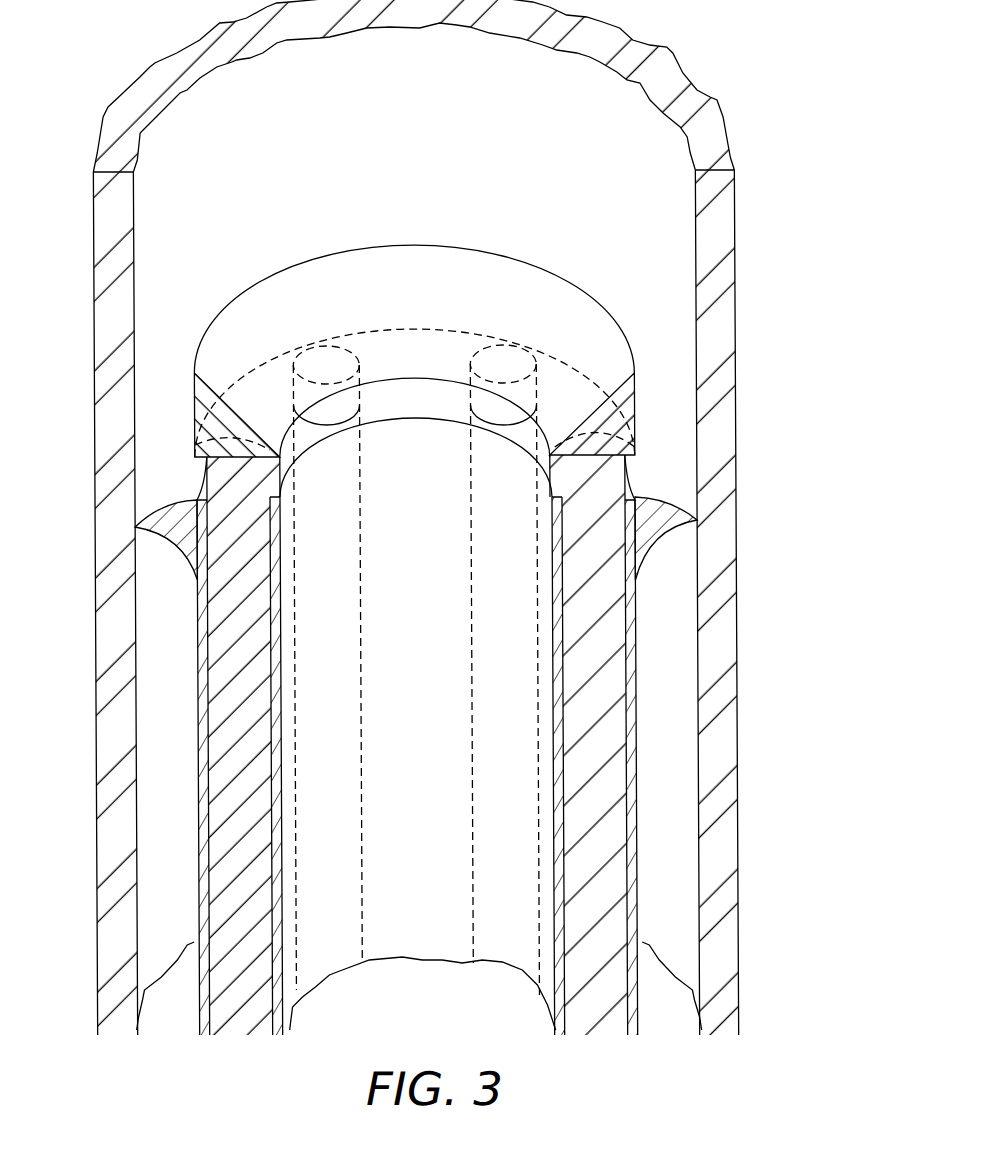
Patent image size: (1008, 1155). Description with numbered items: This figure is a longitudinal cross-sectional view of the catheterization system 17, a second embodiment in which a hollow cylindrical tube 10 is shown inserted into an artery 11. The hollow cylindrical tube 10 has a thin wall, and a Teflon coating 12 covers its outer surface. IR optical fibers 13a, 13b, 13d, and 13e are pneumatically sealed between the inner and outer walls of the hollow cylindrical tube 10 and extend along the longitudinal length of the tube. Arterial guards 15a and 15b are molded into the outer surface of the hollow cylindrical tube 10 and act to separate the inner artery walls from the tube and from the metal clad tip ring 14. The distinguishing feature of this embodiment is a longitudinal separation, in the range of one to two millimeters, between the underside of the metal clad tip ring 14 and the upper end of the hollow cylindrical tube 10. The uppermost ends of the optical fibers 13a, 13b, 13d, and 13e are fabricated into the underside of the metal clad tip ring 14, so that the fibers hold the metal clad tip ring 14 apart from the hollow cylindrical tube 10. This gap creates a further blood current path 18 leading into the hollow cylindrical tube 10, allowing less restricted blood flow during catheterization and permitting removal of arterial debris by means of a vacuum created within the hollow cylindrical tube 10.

The hollow cylindrical tube 10 is at (443, 815).
The artery 11 is at (717, 228).
The Teflon coating 12 is at (638, 1005).
The IR optical fiber 13a is at (238, 992).
The IR optical fiber 13b is at (600, 985).
The IR optical fiber 13d is at (483, 405).
The IR optical fiber 13e is at (343, 410).
The metal clad tip ring 14 is at (400, 243).
The arterial guard 15a is at (178, 535).
The arterial guard 15b is at (653, 530).
The catheterization system 17 is at (494, 215).
The blood current path 18 is at (192, 470).